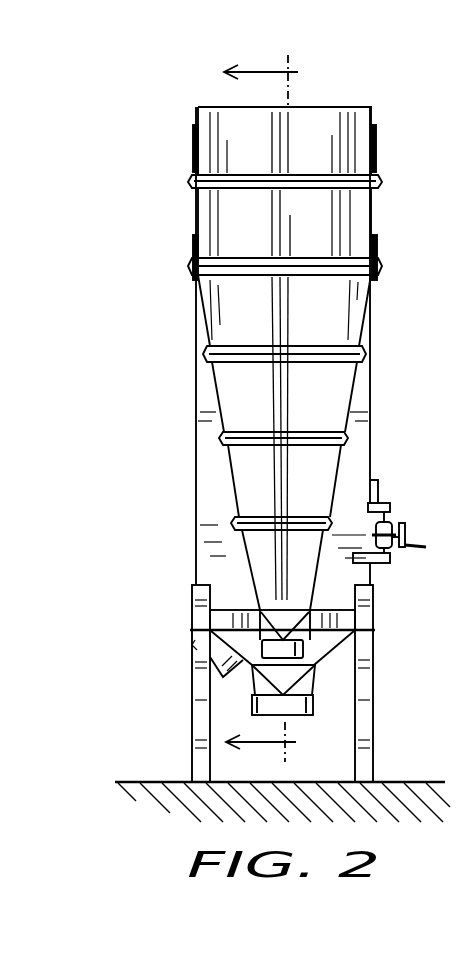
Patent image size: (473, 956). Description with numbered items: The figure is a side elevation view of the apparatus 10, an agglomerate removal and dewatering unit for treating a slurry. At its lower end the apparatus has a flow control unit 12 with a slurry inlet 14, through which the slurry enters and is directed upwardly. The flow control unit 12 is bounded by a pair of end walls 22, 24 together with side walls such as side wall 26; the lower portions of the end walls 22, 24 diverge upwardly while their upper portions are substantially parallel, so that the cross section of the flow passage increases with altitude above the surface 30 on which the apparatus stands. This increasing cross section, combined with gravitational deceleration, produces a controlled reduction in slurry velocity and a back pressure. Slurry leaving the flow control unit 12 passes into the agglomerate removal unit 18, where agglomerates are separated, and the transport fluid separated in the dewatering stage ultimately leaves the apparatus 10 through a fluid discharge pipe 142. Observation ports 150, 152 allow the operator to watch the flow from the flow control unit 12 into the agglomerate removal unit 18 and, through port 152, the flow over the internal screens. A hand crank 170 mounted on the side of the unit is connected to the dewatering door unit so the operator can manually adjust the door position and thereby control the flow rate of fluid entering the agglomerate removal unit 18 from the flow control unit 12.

The apparatus 10 is at (158, 148).
The flow control unit 12 is at (198, 322).
The slurry inlet 14 is at (318, 666).
The agglomerate removal unit 18 is at (190, 488).
The end wall 22 is at (218, 392).
The end wall 24 is at (345, 397).
The side wall 26 is at (320, 325).
The surface 30 is at (405, 781).
The fluid discharge pipe 142 is at (252, 705).
The observation port 150 is at (196, 156).
The observation port 152 is at (196, 251).
The hand crank 170 is at (404, 520).